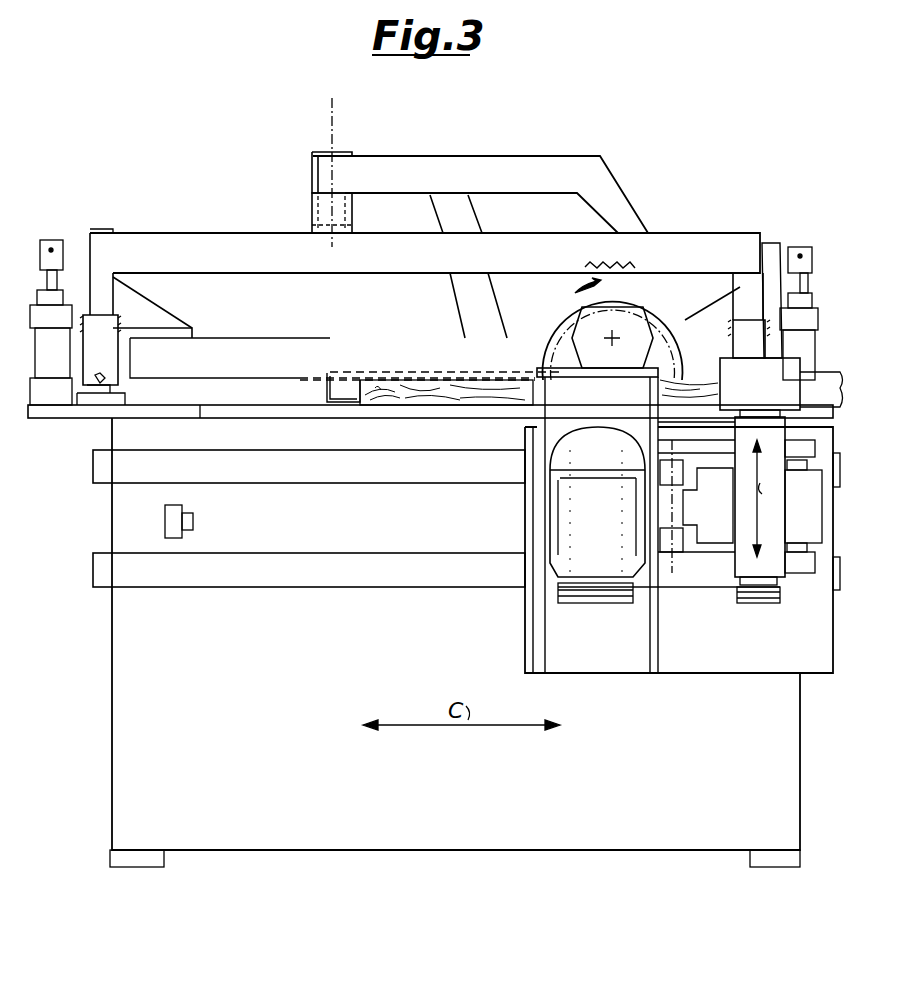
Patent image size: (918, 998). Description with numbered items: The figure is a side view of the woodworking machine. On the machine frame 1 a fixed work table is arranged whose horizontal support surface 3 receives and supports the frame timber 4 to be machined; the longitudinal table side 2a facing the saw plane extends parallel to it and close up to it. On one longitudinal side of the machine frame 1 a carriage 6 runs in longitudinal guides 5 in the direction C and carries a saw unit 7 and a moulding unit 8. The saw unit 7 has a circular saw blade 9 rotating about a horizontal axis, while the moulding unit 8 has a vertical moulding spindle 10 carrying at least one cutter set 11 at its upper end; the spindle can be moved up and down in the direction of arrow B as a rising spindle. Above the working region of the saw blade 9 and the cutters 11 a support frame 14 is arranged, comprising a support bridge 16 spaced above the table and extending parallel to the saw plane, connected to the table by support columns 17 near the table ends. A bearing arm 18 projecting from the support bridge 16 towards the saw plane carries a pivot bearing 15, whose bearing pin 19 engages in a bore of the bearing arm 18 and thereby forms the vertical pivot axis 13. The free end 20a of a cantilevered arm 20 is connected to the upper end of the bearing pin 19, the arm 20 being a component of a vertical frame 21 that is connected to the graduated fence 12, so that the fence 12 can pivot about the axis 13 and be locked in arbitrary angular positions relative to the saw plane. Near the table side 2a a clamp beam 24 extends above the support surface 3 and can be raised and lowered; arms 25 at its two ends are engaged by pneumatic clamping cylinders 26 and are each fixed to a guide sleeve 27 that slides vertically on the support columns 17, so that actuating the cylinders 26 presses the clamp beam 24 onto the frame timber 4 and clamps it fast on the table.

The machine frame 1 is at (318, 833).
The longitudinal table side 2a is at (70, 418).
The horizontal support surface 3 is at (190, 405).
The frame timber 4 is at (448, 395).
The longitudinal guides 5 is at (147, 473).
The carriage 6 is at (703, 668).
The saw unit 7 is at (638, 305).
The moulding unit 8 is at (787, 583).
The circular saw blade 9 is at (622, 292).
The vertical moulding spindle 10 is at (762, 415).
The cutter set 11 is at (755, 297).
The graduated fence 12 is at (347, 392).
The vertical pivot axis 13 is at (340, 107).
The support frame 14 is at (233, 232).
The pivot bearing 15 is at (355, 207).
The support bridge 16 is at (215, 248).
The support columns 17 is at (100, 290).
The bearing arm 18 is at (352, 218).
The bearing pin 19 is at (318, 218).
The cantilevered arm 20 is at (498, 175).
The free end 20a is at (340, 173).
The vertical frame 21 is at (572, 157).
The clamp beam 24 is at (240, 355).
The arms 25 is at (128, 312).
The pneumatic clamping cylinders 26 is at (46, 330).
The guide sleeve 27 is at (107, 378).